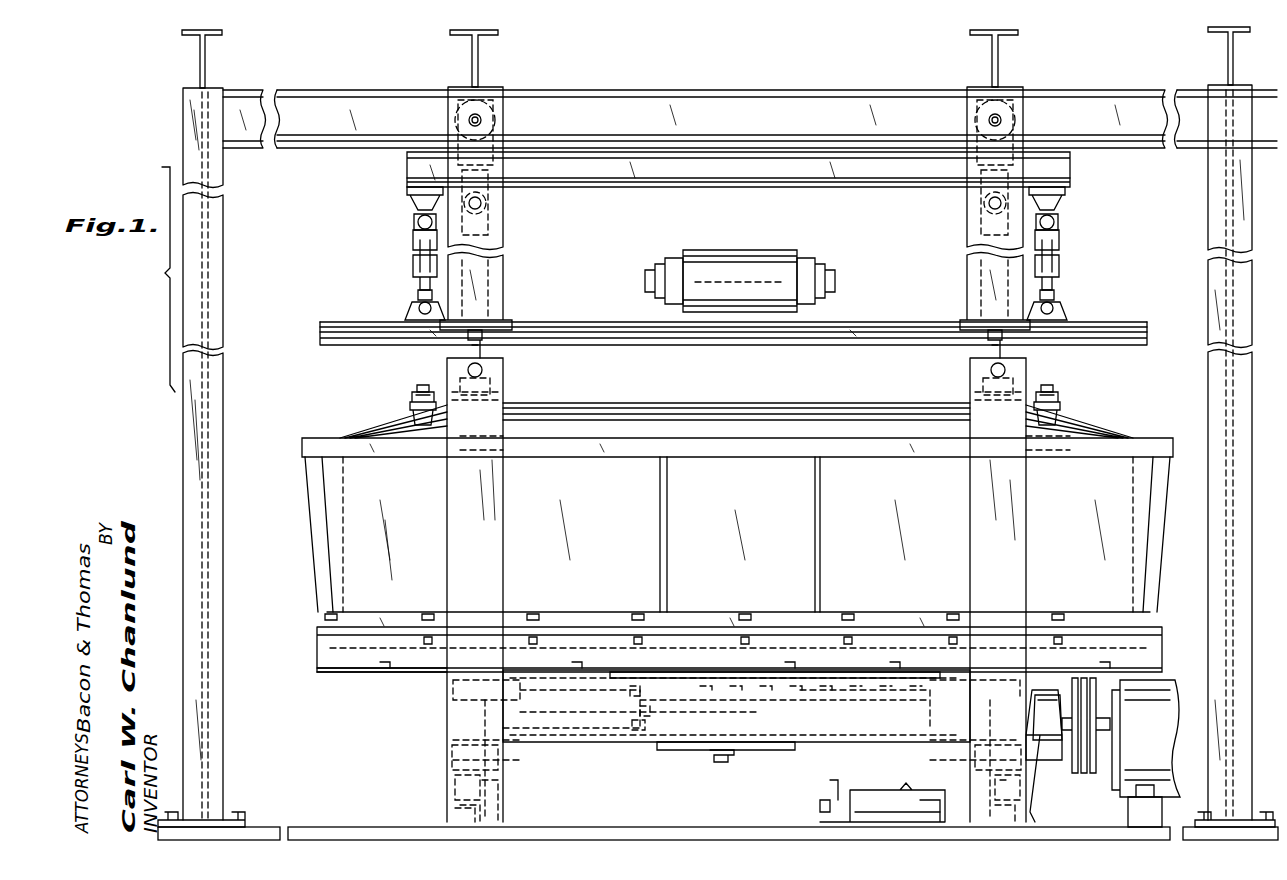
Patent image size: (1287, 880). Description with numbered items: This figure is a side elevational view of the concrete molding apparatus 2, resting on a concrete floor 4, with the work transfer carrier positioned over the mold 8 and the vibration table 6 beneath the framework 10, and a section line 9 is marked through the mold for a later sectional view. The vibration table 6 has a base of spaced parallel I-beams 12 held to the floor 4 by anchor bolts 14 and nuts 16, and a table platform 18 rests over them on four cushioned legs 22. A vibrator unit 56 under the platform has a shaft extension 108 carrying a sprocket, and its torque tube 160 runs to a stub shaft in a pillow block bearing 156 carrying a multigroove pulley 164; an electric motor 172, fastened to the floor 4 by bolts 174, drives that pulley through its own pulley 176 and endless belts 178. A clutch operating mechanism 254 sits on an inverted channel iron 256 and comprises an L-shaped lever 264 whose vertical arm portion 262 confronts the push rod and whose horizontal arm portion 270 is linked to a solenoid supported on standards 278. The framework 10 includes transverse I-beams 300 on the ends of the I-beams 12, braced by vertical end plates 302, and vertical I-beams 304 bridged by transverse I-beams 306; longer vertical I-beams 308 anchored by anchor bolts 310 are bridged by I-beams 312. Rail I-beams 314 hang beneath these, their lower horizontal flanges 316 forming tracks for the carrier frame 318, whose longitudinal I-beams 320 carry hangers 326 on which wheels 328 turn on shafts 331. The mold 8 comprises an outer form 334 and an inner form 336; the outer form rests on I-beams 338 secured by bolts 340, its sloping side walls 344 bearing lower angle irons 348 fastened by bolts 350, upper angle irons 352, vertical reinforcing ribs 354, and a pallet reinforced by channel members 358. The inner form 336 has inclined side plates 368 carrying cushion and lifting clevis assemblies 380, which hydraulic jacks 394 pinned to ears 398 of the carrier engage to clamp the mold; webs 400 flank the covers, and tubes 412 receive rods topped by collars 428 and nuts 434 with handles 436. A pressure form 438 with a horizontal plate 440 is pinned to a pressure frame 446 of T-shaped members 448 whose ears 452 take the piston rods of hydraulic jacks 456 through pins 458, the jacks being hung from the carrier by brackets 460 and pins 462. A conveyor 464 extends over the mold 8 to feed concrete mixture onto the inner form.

The molding apparatus 2 is at (1130, 80).
The concrete floor 4 is at (560, 826).
The vibration table 6 is at (440, 706).
The mold 8 is at (1078, 410).
The section line 9 is at (722, 490).
The framework 10 is at (632, 85).
The I-beams 12 is at (985, 770).
The anchor bolts 14 is at (455, 826).
The nuts 16 is at (440, 790).
The table platform 18 is at (812, 672).
The cushioned leg 22 is at (528, 700).
The vibrator unit 56 is at (773, 748).
The shaft extension 108 is at (560, 742).
The pillow block bearing 156 is at (1065, 684).
The torque tube 160 is at (825, 712).
The multigroove pulley 164 is at (1110, 692).
The electric motor 172 is at (1160, 680).
The bolts 174 is at (1148, 785).
The pulley 176 is at (1110, 714).
The endless belts 178 is at (1085, 678).
The clutch operating mechanism 254 is at (800, 795).
The inverted channel iron 256 is at (870, 800).
The vertical arm portion 262 is at (815, 748).
The L-shaped lever 264 is at (845, 780).
The horizontal arm portion 270 is at (885, 790).
The standards 278 is at (896, 820).
The transverse I-beams 300 is at (625, 742).
The vertical end plates 302 is at (455, 765).
The vertical I-beams 304 is at (508, 520).
The transverse I-beams 306 is at (482, 62).
The vertical I-beams 308 is at (225, 412).
The anchor bolts 310 is at (235, 820).
The I-beams 312 is at (200, 50).
The rail I-beams 314 is at (800, 100).
The lower horizontal flanges 316 is at (710, 138).
The carrier frame 318 is at (842, 192).
The longitudinal I-beams 320 is at (600, 192).
The hangers 326 is at (500, 168).
The wheel 328 is at (495, 118).
The shaft 331 is at (455, 120).
The outer form 334 is at (305, 505).
The inner form 336 is at (775, 385).
The I-beams 338 is at (370, 672).
The bolts 340 is at (582, 664).
The side walls 344 is at (600, 442).
The angle irons 348 is at (705, 610).
The bolts 350 is at (432, 612).
The angle irons 352 is at (305, 450).
The reinforcing ribs 354 is at (668, 525).
The channel members 358 is at (335, 672).
The inclined side plates 368 is at (840, 400).
The cushion and lifting clevis assembly 380 is at (488, 366).
The hydraulic jack 394 is at (490, 265).
The ears 398 is at (488, 203).
The webs 400 is at (500, 410).
The cylindrical tube 412 is at (425, 430).
The collar 428 is at (410, 406).
The nut 434 is at (418, 388).
The handle 436 is at (470, 340).
The pressure form 438 is at (318, 345).
The horizontal plate 440 is at (620, 346).
The pressure frame 446 is at (560, 318).
The T-shaped members 448 is at (905, 332).
The ears 452 is at (412, 312).
The hydraulic jacks 456 is at (410, 262).
The pins 458 is at (415, 295).
The brackets 460 is at (412, 200).
The pins 462 is at (416, 224).
The conveyor 464 is at (815, 250).